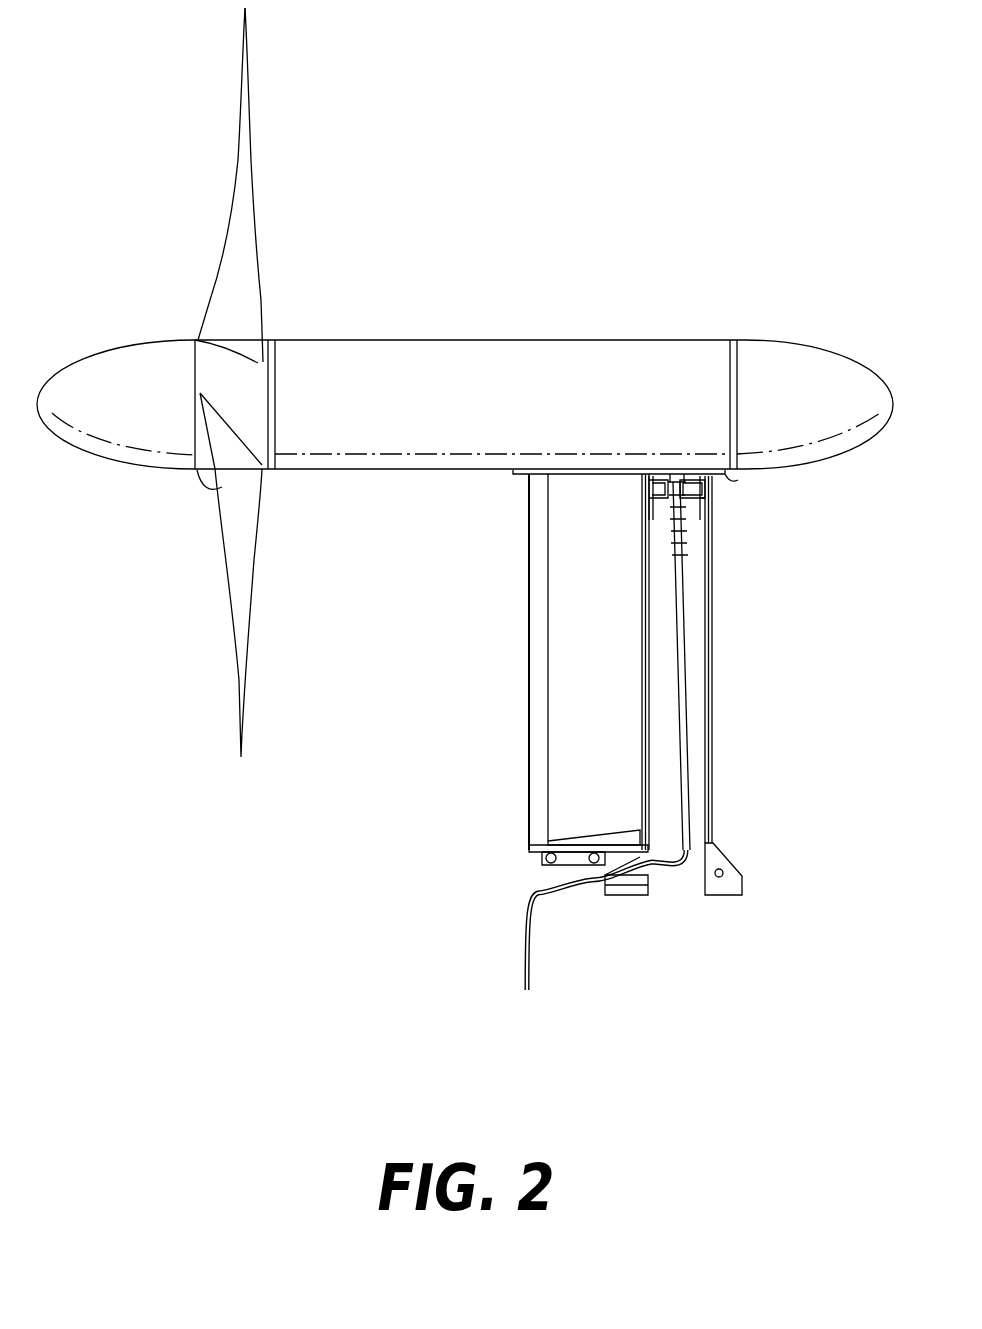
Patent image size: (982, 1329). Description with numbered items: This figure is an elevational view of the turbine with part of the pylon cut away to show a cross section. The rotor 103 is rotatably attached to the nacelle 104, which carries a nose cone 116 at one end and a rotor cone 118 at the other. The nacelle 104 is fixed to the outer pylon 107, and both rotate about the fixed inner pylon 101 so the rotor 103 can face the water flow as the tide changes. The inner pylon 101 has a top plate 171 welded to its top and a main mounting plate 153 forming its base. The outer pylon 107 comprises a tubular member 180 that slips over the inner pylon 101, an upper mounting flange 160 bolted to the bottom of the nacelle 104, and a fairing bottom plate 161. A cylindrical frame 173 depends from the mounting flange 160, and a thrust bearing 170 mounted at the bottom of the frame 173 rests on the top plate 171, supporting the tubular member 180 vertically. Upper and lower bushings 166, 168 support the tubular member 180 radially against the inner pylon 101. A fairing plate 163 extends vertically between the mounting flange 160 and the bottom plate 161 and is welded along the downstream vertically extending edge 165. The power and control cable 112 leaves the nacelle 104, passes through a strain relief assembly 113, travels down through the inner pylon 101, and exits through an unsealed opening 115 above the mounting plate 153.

The inner pylon 101 is at (714, 695).
The rotor 103 is at (246, 135).
The nacelle 104 is at (400, 350).
The outer pylon 107 is at (714, 758).
The power and control cable 112 is at (526, 887).
The strain relief assembly 113 is at (689, 567).
The unsealed opening 115 is at (657, 868).
The nose cone 116 is at (787, 358).
The rotor cone 118 is at (124, 362).
The main mounting plate 153 is at (743, 852).
The upper mounting flange 160 is at (513, 478).
The fairing bottom plate 161 is at (585, 843).
The fairing plate 163 is at (562, 768).
The vertically extending edge 165 is at (529, 682).
The upper bushing 166 is at (638, 521).
The lower bushing 168 is at (638, 826).
The thrust bearing 170 is at (638, 494).
The top plate 171 is at (712, 518).
The cylindrical frame 173 is at (663, 478).
The tubular member 180 is at (642, 668).